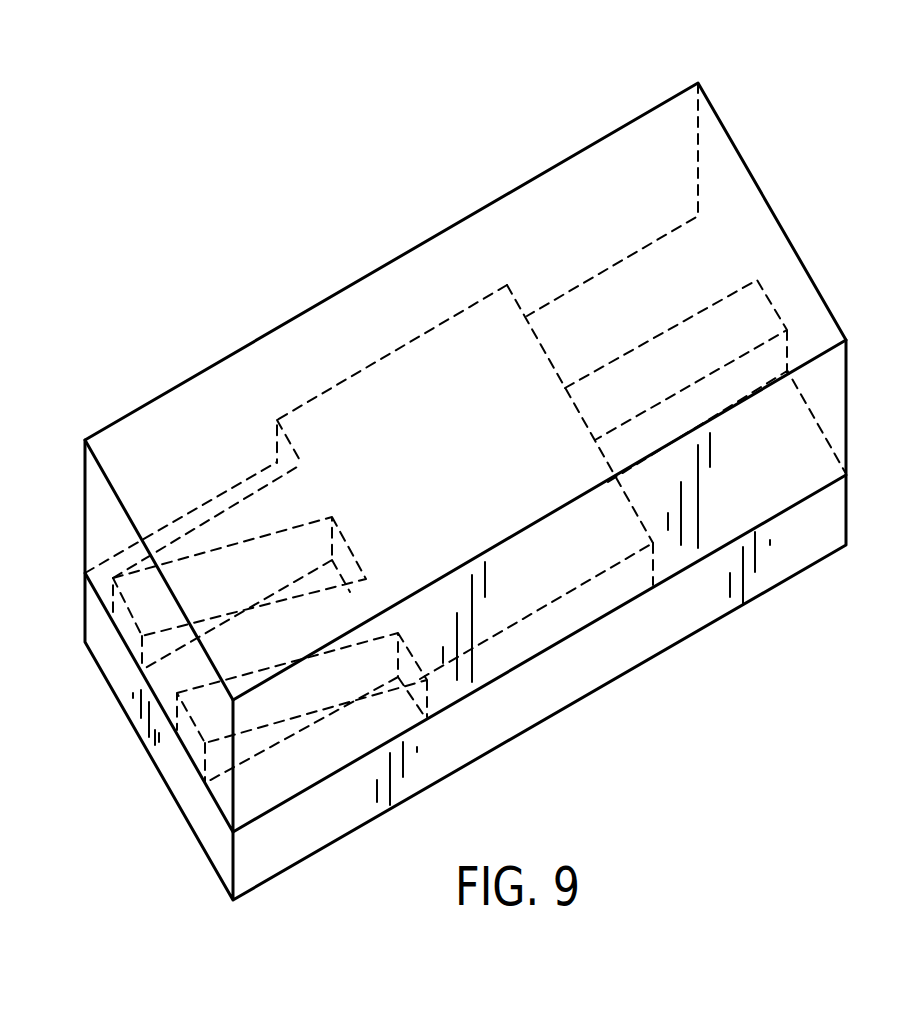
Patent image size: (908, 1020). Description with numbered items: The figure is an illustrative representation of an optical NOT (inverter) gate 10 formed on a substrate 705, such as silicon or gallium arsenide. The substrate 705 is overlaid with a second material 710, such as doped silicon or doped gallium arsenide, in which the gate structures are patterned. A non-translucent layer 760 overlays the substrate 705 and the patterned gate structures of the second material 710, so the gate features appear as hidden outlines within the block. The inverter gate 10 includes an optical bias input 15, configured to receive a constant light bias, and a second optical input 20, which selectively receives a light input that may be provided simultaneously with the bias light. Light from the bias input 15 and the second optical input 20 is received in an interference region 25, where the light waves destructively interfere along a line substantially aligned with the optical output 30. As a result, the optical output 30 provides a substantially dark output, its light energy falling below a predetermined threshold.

The inverter gate 10 is at (430, 204).
The optical bias input 15 is at (245, 533).
The second optical input 20 is at (332, 693).
The interference region 25 is at (513, 582).
The optical output 30 is at (690, 344).
The substrate 705 is at (684, 612).
The second material 710 is at (418, 410).
The non-translucent layer 760 is at (618, 158).